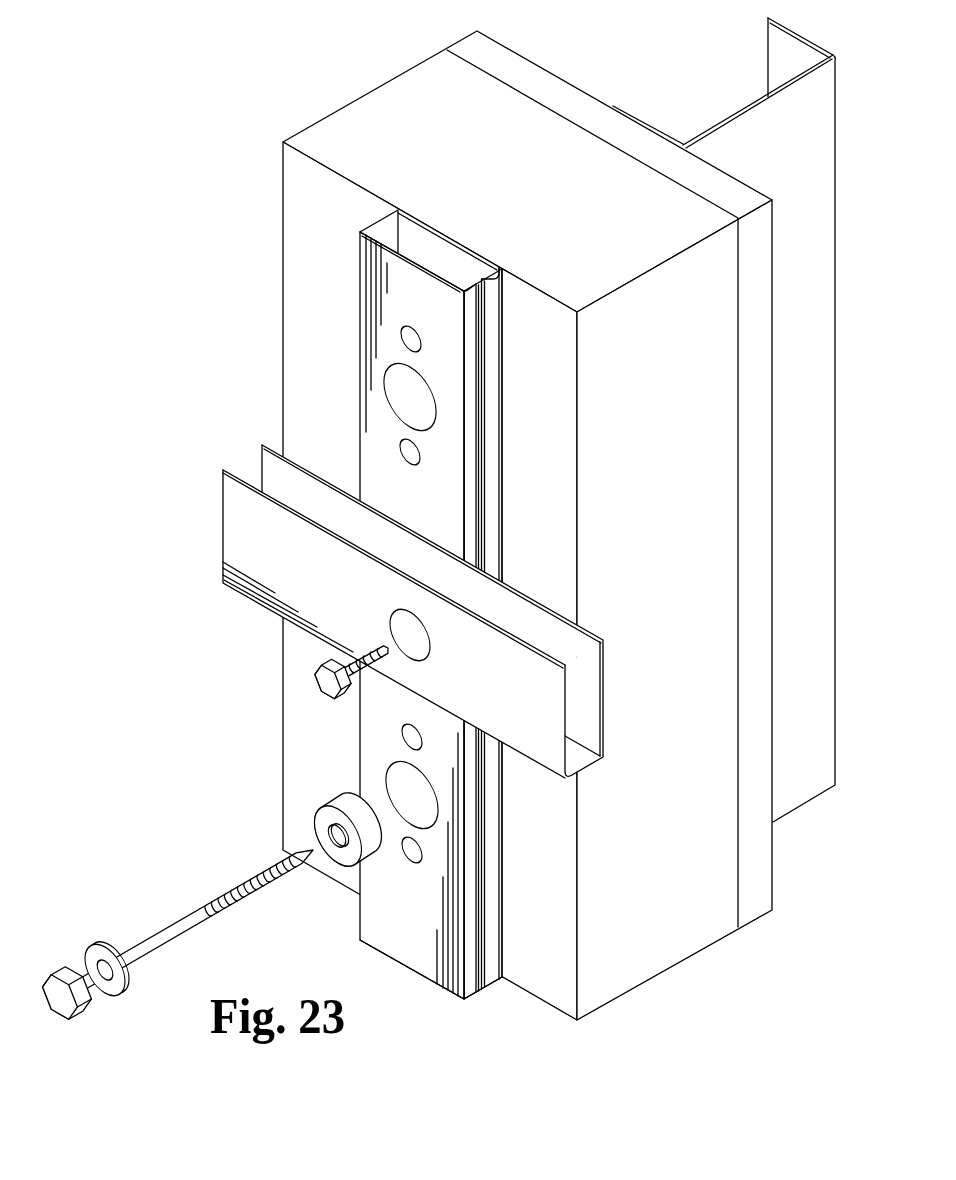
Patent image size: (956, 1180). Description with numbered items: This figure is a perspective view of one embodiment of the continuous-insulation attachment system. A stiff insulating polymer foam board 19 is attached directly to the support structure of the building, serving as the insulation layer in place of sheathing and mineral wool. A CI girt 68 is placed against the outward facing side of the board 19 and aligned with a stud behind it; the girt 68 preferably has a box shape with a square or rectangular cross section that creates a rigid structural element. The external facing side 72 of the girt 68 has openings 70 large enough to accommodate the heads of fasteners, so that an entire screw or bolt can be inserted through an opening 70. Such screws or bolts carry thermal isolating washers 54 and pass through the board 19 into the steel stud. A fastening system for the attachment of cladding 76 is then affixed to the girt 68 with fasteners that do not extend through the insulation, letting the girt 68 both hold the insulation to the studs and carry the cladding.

The insulating polymer foam board 19 is at (367, 93).
The CI girt 68 is at (402, 604).
The external facing side 72 is at (372, 452).
The fastening system for the attachment of cladding 76 is at (255, 603).
The opening 70 is at (387, 767).
The thermal isolating washer 54 is at (315, 813).